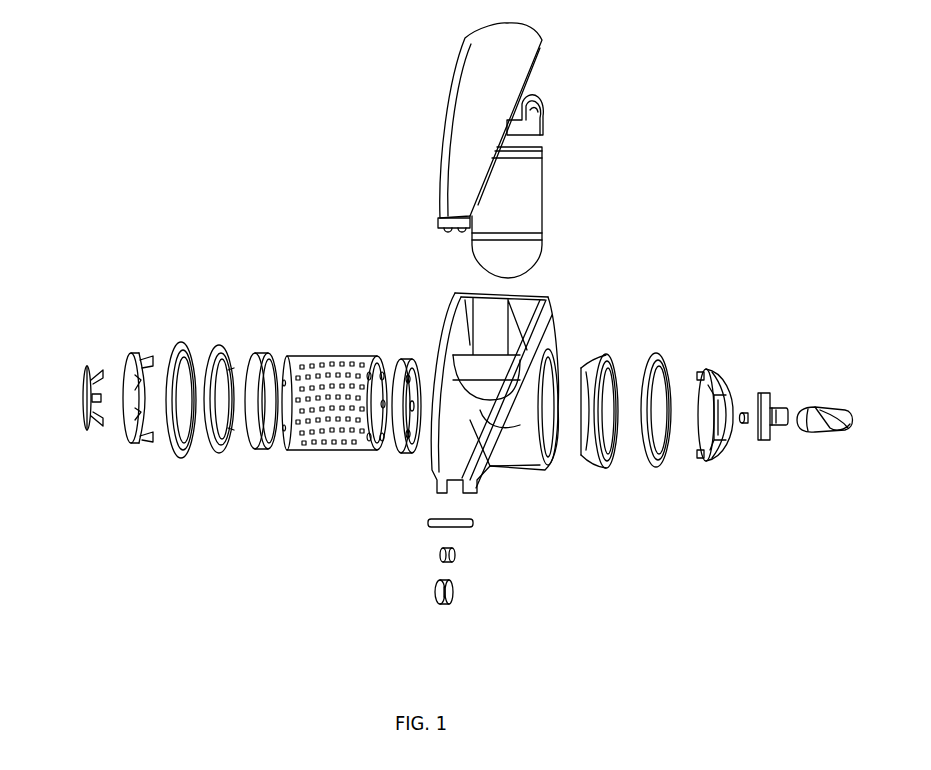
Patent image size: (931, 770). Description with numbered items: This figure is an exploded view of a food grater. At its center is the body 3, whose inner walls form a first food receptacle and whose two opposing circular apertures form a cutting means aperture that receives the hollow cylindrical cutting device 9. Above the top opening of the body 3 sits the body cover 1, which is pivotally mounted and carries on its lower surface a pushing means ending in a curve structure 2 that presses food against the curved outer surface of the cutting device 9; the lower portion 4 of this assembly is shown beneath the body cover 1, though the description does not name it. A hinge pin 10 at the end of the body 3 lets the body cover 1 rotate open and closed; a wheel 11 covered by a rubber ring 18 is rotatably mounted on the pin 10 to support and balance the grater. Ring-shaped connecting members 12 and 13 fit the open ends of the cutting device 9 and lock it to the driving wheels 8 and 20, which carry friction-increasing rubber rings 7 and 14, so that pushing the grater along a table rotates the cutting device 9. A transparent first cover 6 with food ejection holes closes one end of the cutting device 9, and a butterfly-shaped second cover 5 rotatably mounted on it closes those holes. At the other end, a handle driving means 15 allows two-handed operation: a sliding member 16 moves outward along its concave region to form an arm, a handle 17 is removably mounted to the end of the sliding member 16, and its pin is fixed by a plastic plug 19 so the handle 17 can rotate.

The body cover 1 is at (428, 177).
The curve structure 2 is at (547, 117).
The body 3 is at (555, 319).
The base body 4 is at (468, 257).
The second cover 5 is at (78, 438).
The first cover 6 is at (131, 447).
The rubber ring 7 is at (173, 470).
The driving wheel 8 is at (213, 463).
The cylindrical cutting device 9 is at (300, 465).
The pin 10 is at (420, 528).
The wheel 11 is at (428, 563).
The connecting member 12 is at (258, 462).
The connecting member 13 is at (397, 467).
The rubber ring 14 is at (640, 478).
The handle driving means 15 is at (705, 477).
The sliding member 16 is at (768, 448).
The handle 17 is at (815, 447).
The rubber ring 18 is at (432, 607).
The plastic plug 19 is at (741, 410).
The driving wheel 20 is at (588, 470).